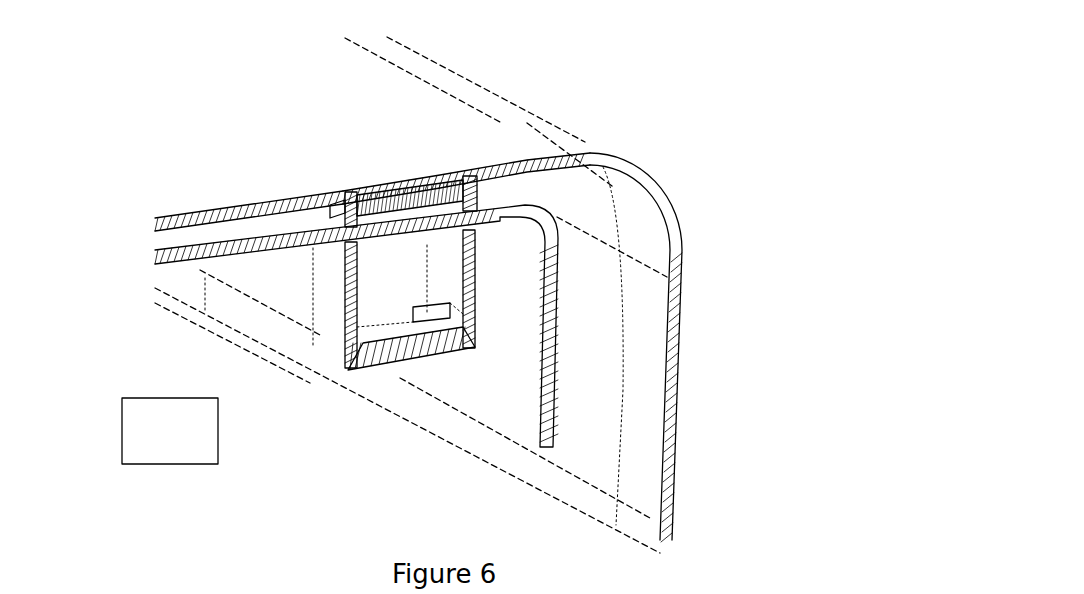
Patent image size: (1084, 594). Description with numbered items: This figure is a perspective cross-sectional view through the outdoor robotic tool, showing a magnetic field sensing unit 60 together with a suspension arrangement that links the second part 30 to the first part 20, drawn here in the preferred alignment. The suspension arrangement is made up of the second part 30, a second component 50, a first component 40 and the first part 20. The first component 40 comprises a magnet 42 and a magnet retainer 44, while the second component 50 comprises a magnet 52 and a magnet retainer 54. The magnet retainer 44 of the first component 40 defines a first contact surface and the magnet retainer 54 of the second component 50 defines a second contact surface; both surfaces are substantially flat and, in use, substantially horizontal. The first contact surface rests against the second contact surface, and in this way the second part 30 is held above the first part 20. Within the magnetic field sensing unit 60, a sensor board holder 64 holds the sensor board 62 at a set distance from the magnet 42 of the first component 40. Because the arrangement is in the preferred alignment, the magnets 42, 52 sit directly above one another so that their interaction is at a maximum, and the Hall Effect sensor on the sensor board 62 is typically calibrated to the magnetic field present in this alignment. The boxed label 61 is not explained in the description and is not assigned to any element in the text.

The first part 20 is at (537, 387).
The second part 30 is at (522, 127).
The first component 40 is at (505, 201).
The magnet 42 is at (350, 193).
The magnet retainer 44 is at (324, 226).
The second component 50 is at (498, 188).
The magnet 52 is at (379, 184).
The magnet retainer 54 is at (333, 212).
The magnetic field sensing unit 60 is at (265, 487).
The connector label 61 is at (363, 352).
The sensor board 62 is at (434, 350).
The sensor board holder 64 is at (306, 353).